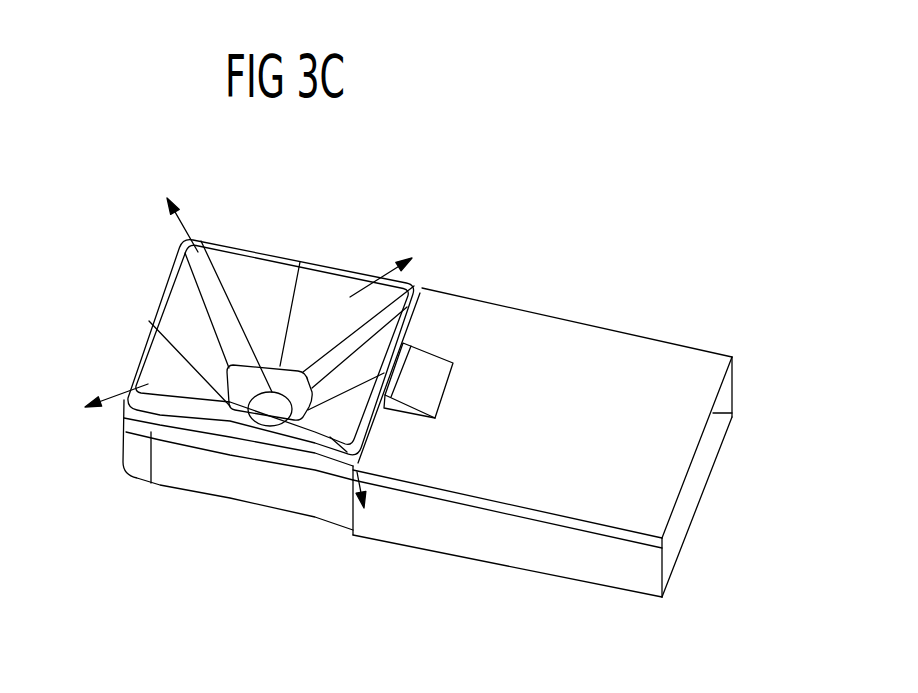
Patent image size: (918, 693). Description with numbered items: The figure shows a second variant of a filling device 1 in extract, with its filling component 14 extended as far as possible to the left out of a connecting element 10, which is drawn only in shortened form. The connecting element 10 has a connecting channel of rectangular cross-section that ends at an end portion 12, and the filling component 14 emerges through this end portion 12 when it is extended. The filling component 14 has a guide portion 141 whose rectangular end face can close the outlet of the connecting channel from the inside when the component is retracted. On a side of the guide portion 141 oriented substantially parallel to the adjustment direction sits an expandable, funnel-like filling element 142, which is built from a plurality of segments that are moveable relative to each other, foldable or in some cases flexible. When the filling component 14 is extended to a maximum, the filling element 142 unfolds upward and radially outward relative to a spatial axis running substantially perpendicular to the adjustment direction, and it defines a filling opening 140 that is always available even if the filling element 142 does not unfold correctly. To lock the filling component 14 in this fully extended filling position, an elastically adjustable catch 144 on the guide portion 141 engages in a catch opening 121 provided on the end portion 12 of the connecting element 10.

The filling device 1 is at (610, 297).
The connecting element 10 is at (540, 552).
The end portion 12 is at (440, 310).
The catch opening 121 is at (452, 365).
The filling component 14 is at (283, 231).
The filling opening 140 is at (268, 432).
The guide portion 141 is at (168, 474).
The filling element 142 is at (173, 317).
The catch 144 is at (432, 390).